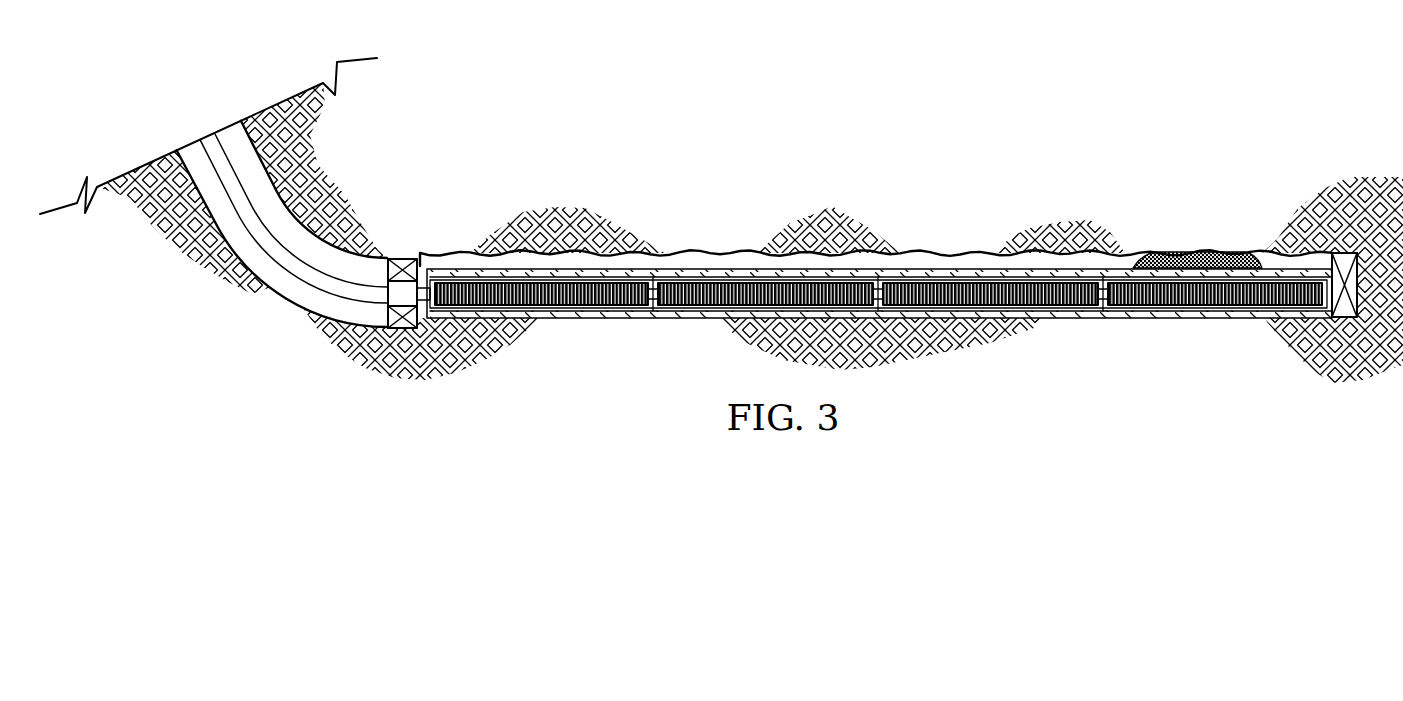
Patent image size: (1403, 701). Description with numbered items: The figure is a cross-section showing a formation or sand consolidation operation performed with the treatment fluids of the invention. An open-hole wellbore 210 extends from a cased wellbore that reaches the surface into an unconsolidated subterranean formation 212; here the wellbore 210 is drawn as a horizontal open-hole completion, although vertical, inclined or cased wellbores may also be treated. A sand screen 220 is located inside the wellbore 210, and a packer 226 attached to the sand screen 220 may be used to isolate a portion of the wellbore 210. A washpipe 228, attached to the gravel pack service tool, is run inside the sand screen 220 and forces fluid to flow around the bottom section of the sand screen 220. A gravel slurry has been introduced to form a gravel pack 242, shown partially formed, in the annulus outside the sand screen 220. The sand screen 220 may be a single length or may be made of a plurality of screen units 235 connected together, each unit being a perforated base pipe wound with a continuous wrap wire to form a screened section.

The open-hole wellbore 210 is at (690, 252).
The unconsolidated subterranean formation 212 is at (1108, 337).
The sand screen 220 is at (922, 270).
The packer 226 is at (403, 256).
The washpipe 228 is at (290, 273).
The screen units 235 is at (590, 312).
The gravel pack 242 is at (1187, 260).